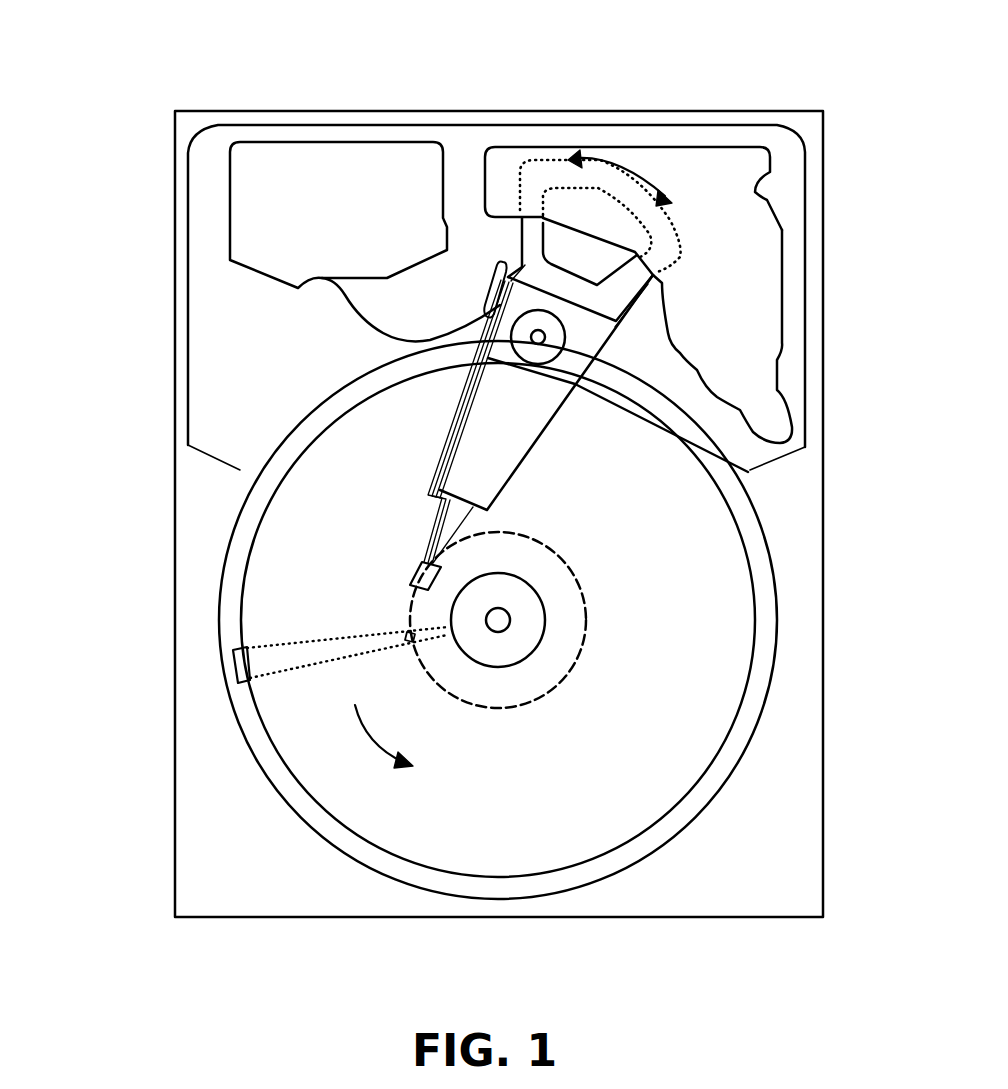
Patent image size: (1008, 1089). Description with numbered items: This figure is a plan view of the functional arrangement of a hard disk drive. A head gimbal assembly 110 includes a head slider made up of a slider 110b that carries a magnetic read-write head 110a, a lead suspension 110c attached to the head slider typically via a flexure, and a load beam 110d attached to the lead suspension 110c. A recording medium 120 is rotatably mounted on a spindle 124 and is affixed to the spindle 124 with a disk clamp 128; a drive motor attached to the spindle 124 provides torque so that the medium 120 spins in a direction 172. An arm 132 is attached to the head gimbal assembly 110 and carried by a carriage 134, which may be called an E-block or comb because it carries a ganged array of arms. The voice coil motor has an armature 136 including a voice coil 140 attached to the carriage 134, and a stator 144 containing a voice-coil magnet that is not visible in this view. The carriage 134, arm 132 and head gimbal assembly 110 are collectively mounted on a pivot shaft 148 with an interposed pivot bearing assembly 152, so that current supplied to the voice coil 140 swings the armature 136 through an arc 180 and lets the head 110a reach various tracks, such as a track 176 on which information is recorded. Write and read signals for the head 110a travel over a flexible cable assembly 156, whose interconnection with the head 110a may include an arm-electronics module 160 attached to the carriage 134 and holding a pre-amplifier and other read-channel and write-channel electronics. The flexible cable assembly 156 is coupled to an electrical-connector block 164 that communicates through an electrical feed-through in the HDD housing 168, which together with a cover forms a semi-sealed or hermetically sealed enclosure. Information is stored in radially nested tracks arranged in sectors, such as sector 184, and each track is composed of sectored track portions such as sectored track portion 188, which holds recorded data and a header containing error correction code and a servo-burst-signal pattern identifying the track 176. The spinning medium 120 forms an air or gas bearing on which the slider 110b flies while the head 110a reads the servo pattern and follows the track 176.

The head gimbal assembly 110 is at (105, 420).
The magnetic read-write head 110a is at (413, 592).
The slider 110b is at (430, 565).
The lead suspension 110c is at (436, 530).
The load beam 110d is at (431, 492).
The recording medium 120 is at (680, 575).
The spindle 124 is at (499, 620).
The disk clamp 128 is at (523, 635).
The arm 132 is at (497, 455).
The carriage 134 is at (557, 370).
The armature 136 is at (517, 253).
The voice coil 140 is at (533, 230).
The stator 144 is at (750, 240).
The pivot shaft 148 is at (540, 338).
The pivot bearing assembly 152 is at (551, 349).
The flexible cable assembly 156 is at (353, 313).
The arm-electronics module 160 is at (484, 304).
The electrical-connector block 164 is at (255, 212).
The HDD housing 168 is at (802, 123).
The direction 172 is at (407, 736).
The track 176 is at (575, 580).
The arc 180 is at (627, 165).
The sector 184 is at (222, 667).
The sectored track portion 188 is at (403, 630).